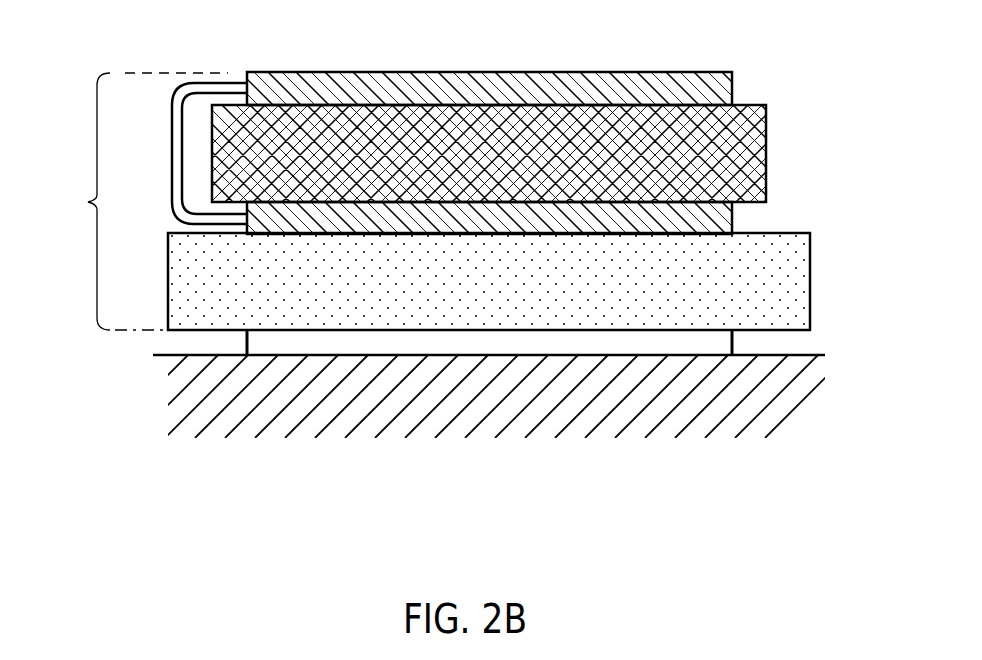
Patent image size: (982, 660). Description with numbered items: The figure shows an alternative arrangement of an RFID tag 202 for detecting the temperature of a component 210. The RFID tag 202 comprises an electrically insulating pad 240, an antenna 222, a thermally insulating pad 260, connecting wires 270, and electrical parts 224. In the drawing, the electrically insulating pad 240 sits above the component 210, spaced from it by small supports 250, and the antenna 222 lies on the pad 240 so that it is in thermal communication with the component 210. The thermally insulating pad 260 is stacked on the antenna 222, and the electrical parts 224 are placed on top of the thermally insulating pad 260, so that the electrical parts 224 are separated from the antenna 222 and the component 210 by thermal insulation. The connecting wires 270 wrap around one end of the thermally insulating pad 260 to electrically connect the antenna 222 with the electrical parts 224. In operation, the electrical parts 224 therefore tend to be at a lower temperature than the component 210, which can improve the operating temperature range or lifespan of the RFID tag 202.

The RFID tag 202 is at (88, 202).
The component 210 is at (188, 403).
The antenna 222 is at (727, 220).
The electrical parts 224 is at (715, 90).
The electrically insulating pad 240 is at (788, 283).
The support posts 250 is at (717, 347).
The thermally insulating pad 260 is at (743, 155).
The connecting wires 270 is at (176, 132).